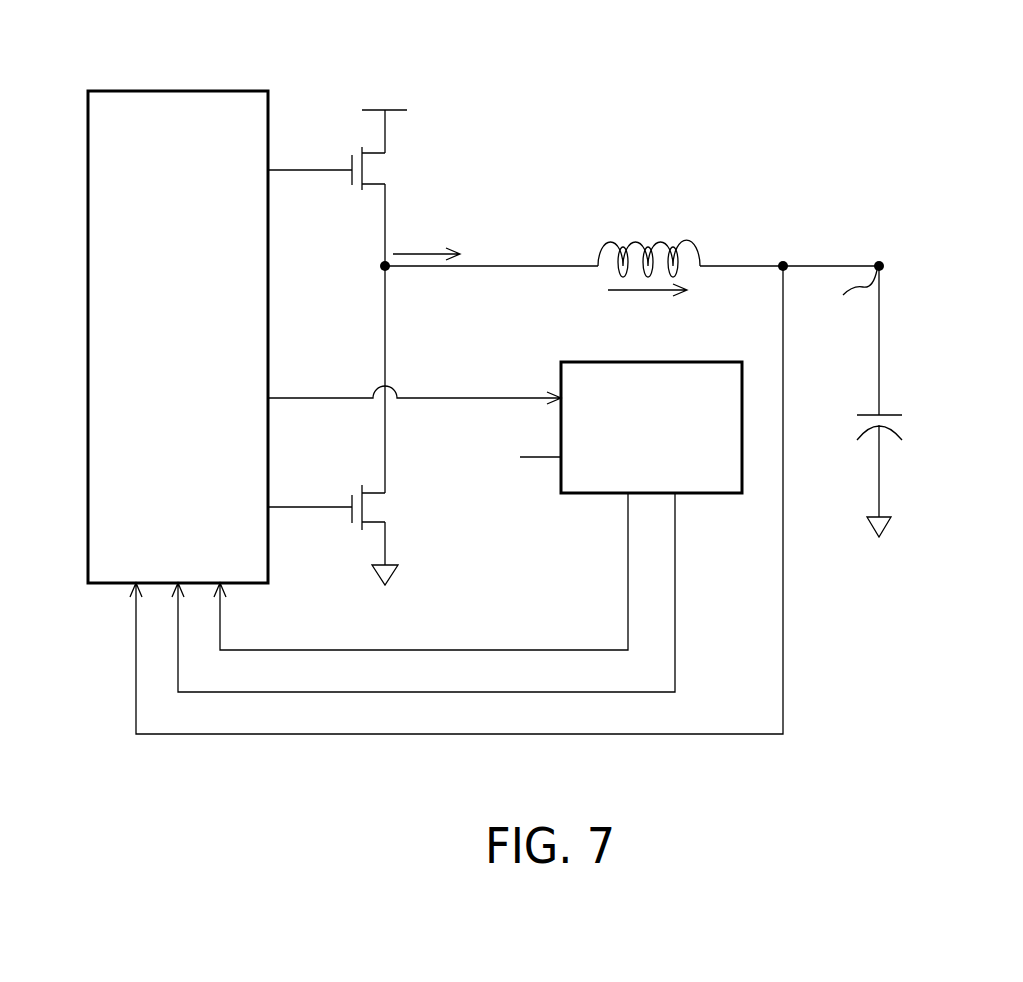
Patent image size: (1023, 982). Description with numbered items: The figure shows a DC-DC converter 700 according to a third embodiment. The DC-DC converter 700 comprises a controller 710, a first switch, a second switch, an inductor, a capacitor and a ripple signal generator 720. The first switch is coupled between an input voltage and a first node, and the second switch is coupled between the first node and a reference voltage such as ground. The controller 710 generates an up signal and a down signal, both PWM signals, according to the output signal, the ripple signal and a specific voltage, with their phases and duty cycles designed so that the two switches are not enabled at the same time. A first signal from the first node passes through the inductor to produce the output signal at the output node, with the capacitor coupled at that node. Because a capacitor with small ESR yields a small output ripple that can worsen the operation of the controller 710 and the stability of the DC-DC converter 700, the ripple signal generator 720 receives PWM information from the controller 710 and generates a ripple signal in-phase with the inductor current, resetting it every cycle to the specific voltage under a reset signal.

The DC-DC converter 700 is at (877, 88).
The controller 710 is at (176, 91).
The ripple signal generator 720 is at (722, 362).